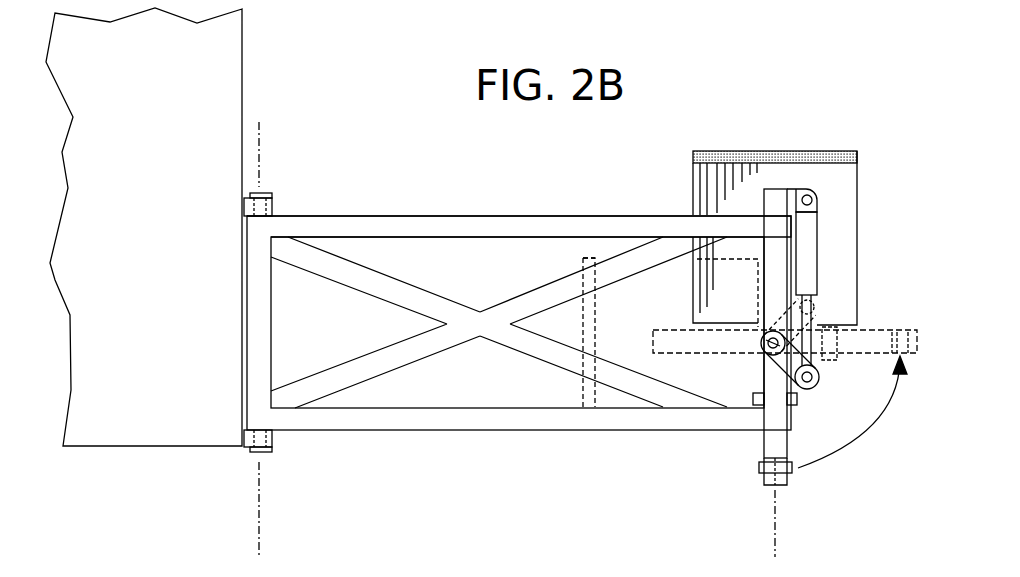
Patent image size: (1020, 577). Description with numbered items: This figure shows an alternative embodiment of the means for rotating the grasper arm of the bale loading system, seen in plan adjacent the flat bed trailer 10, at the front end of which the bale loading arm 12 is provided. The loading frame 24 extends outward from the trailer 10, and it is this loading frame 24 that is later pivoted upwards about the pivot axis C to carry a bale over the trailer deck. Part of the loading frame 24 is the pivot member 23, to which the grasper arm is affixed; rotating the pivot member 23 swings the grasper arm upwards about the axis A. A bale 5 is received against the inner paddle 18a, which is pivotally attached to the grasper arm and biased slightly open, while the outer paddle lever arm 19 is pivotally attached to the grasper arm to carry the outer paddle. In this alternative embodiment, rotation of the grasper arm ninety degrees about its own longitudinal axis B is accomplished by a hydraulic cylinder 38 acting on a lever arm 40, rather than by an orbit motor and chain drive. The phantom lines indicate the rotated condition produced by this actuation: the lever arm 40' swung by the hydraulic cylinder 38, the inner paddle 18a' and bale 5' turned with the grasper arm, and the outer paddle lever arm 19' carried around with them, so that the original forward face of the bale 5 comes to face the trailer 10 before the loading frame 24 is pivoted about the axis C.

The flat bed trailer 10 is at (232, 92).
The pivot axis C is at (259, 163).
The bale loading arm 12 is at (595, 216).
The loading frame 24 is at (420, 216).
The inner paddle 18a' is at (545, 331).
The bale 5' is at (562, 333).
The bale 5 is at (775, 139).
The pivot member 23 is at (762, 204).
The inner paddle 18a is at (873, 238).
The hydraulic cylinder 38 is at (817, 270).
The lever arm 40 is at (812, 378).
The longitudinal axis B is at (773, 343).
The lever arm 40' is at (842, 310).
The outer paddle lever arm 19' is at (791, 383).
The outer paddle lever arm 19 is at (745, 469).
The axis A is at (775, 510).